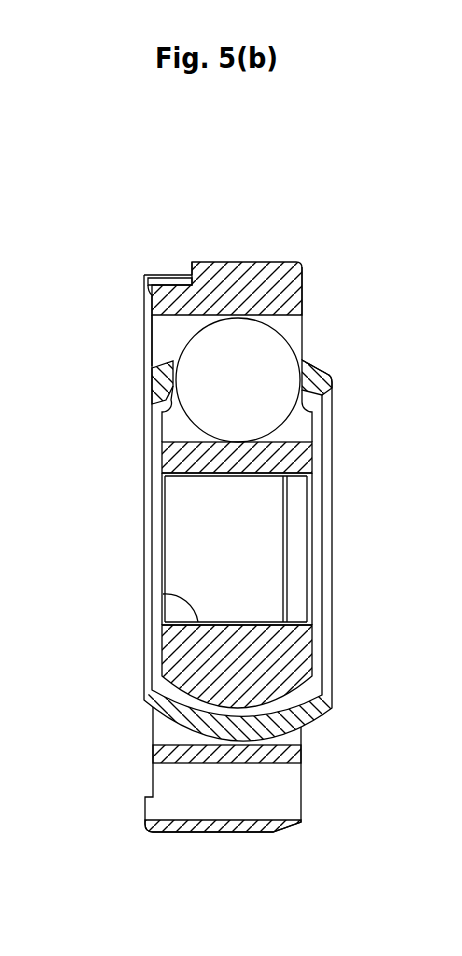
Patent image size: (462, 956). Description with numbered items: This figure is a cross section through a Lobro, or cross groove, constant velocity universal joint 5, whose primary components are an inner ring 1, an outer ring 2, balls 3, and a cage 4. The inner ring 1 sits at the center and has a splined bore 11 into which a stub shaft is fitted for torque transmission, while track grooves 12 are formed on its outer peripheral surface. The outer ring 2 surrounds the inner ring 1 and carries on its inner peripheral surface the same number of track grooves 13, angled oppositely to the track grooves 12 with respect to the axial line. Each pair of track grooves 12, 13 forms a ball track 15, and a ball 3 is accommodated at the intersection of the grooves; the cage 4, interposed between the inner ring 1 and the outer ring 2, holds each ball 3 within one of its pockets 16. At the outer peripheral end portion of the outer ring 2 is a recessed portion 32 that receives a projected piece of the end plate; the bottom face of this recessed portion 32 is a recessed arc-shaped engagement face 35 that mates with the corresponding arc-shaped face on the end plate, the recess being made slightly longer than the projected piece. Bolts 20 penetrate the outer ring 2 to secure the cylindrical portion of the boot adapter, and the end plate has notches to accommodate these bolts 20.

The inner ring 1 is at (303, 665).
The outer ring 2 is at (240, 270).
The balls 3 is at (272, 342).
The cage 4 is at (150, 720).
The constant velocity universal joint 5 is at (317, 248).
The splined bore 11 is at (163, 594).
The track grooves 12 is at (302, 430).
The track grooves 13 is at (167, 332).
The ball tracks 15 is at (146, 401).
The pockets 16 is at (283, 386).
The bolts 20 is at (186, 825).
The recessed portions 32 is at (175, 268).
The recessed arc-shaped engagement face 35 is at (158, 275).